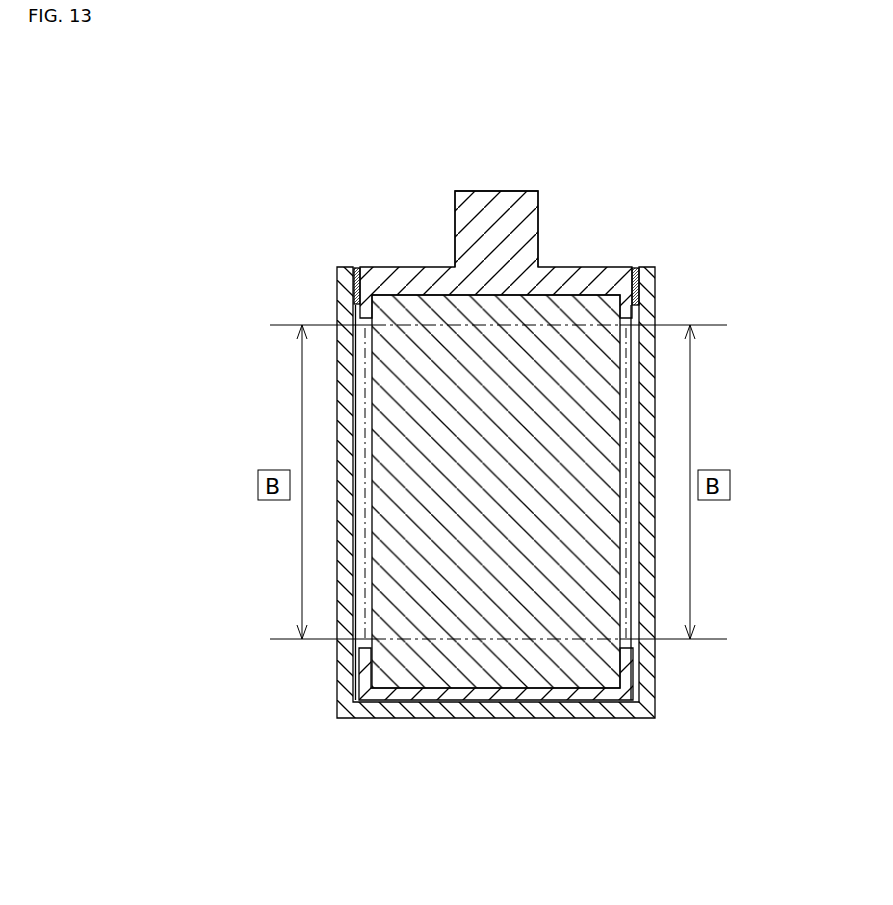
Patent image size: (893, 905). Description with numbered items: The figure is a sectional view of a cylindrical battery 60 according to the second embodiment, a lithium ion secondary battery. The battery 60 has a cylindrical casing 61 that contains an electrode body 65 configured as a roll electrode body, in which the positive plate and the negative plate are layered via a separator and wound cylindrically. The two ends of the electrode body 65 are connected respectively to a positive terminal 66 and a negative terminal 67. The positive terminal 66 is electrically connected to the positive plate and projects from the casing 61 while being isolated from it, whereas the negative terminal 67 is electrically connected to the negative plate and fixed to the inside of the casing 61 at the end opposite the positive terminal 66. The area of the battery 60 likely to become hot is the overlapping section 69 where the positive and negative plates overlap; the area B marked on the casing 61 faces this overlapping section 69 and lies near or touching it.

The battery 60 is at (167, 116).
The cylindrical casing 61 is at (306, 262).
The electrode body 65 is at (610, 369).
The positive terminal 66 is at (528, 215).
The negative terminal 67 is at (608, 693).
The overlapping section 69 is at (365, 382).